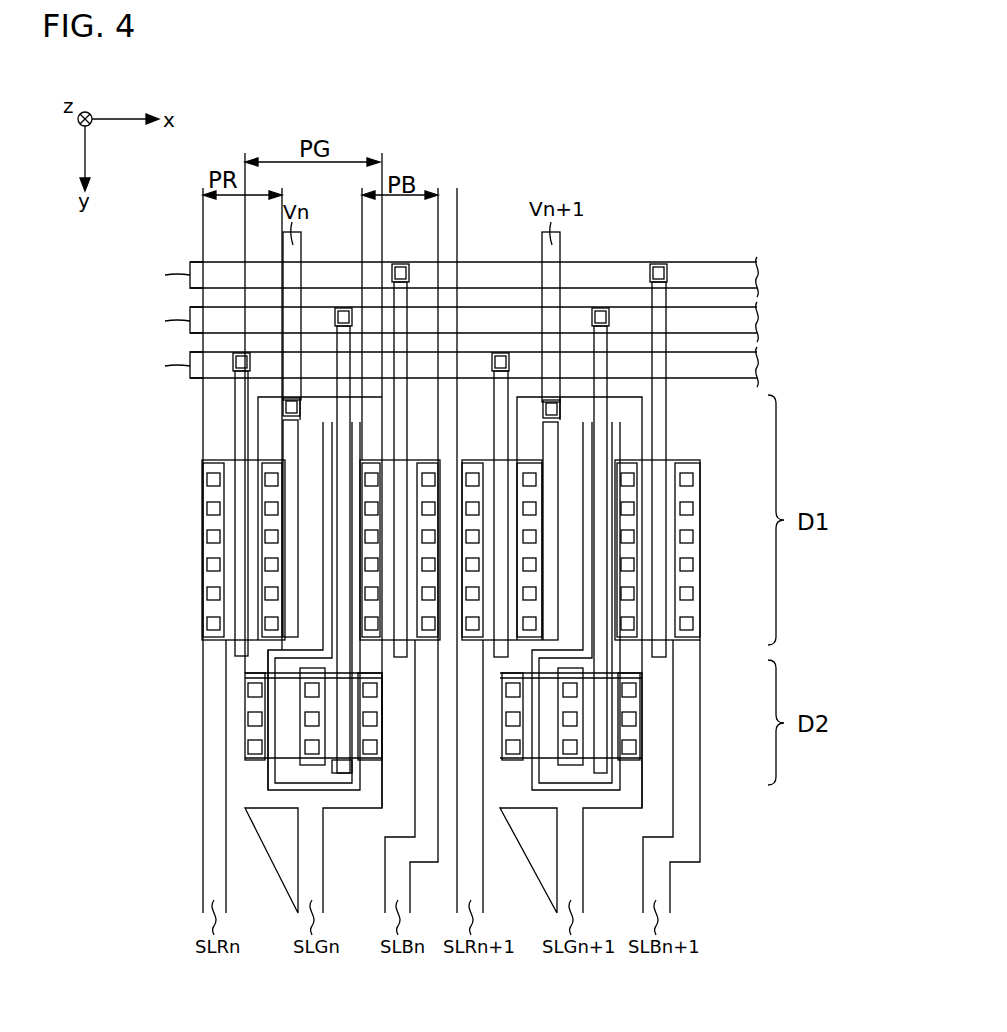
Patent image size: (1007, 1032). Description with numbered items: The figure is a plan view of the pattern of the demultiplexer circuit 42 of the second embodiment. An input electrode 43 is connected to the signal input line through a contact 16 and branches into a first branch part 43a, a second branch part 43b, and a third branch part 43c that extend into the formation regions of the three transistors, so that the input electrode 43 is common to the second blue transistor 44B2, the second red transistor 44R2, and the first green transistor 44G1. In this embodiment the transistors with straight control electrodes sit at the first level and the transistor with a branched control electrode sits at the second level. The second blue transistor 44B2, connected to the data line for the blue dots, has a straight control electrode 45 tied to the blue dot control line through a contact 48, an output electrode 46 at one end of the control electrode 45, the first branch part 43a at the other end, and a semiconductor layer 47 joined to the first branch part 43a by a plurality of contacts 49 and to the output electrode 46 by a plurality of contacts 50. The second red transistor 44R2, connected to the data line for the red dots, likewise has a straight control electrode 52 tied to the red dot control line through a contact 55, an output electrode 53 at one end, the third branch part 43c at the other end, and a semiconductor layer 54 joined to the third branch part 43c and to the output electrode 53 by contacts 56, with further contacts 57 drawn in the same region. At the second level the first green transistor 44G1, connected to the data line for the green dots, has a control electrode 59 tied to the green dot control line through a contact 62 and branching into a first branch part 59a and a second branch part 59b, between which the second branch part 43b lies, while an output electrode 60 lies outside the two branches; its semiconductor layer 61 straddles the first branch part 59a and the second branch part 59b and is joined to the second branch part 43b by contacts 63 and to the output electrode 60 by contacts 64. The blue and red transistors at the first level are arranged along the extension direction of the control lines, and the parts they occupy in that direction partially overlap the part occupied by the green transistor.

The demultiplexer circuit 42 is at (492, 150).
The contact 16 is at (290, 408).
The input electrode 43 is at (265, 421).
The first branch part 43a is at (373, 428).
The second branch part 43b is at (310, 637).
The third branch part 43c is at (265, 452).
The second red transistor 44R2 is at (183, 628).
The first green transistor 44G1 is at (240, 790).
The second blue transistor 44B2 is at (410, 675).
The control electrode 45 is at (408, 452).
The output electrode 46 is at (432, 778).
The semiconductor layer 47 is at (428, 641).
The contact 48 is at (400, 270).
The contacts 49 is at (430, 537).
The contacts 50 is at (375, 538).
The control electrode 52 is at (238, 555).
The output electrode 53 is at (212, 678).
The semiconductor layer 54 is at (285, 523).
The contact 55 is at (237, 358).
The contacts 56 is at (272, 537).
The contact hole 57 is at (212, 598).
The control electrode 59 is at (342, 600).
The first branch part 59a is at (340, 770).
The second branch part 59b is at (280, 770).
The output electrode 60 is at (257, 797).
The semiconductor layer 61 is at (248, 762).
The contact 62 is at (343, 318).
The contacts 63 is at (310, 720).
The contacts 64 is at (253, 720).